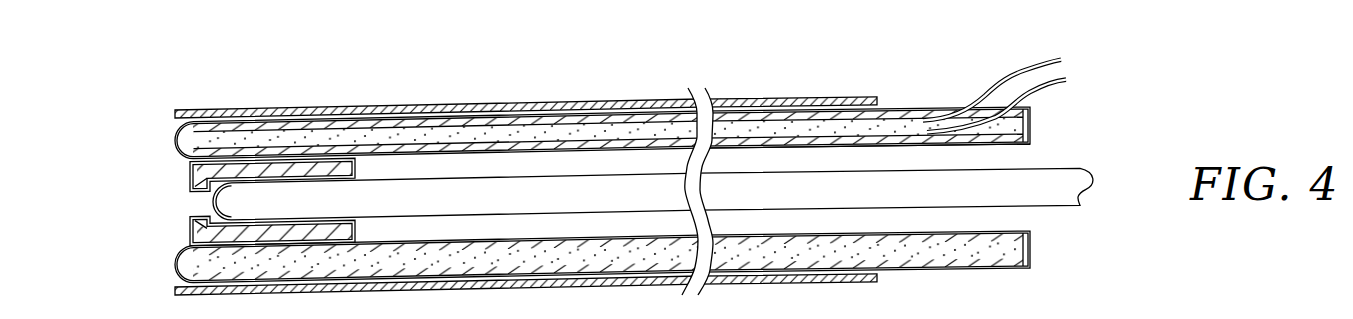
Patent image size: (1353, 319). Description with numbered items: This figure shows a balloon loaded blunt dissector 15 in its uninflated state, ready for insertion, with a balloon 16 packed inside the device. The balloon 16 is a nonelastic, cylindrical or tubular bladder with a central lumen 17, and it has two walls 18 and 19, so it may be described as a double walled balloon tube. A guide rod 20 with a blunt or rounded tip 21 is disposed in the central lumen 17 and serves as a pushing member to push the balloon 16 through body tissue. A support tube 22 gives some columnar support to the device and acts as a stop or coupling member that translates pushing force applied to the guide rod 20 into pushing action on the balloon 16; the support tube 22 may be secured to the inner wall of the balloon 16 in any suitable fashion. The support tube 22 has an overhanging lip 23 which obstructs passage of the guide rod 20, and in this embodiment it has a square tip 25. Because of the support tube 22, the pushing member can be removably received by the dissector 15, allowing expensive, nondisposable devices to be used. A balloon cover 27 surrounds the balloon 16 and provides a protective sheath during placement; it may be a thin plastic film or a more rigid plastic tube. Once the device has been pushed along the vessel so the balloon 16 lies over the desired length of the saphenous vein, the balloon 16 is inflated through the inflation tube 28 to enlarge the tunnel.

The balloon loaded blunt dissector 15 is at (522, 84).
The balloon 16 is at (1030, 121).
The central lumen 17 is at (1015, 157).
The wall 18 is at (906, 107).
The wall 19 is at (932, 147).
The guide rod 20 is at (1090, 176).
The blunt or rounded tip 21 is at (212, 201).
The support tube 22 is at (355, 168).
The overhanging lip 23 is at (190, 232).
The square tip 25 is at (190, 177).
The balloon cover 27 is at (356, 107).
The inflation tube 28 is at (1011, 72).